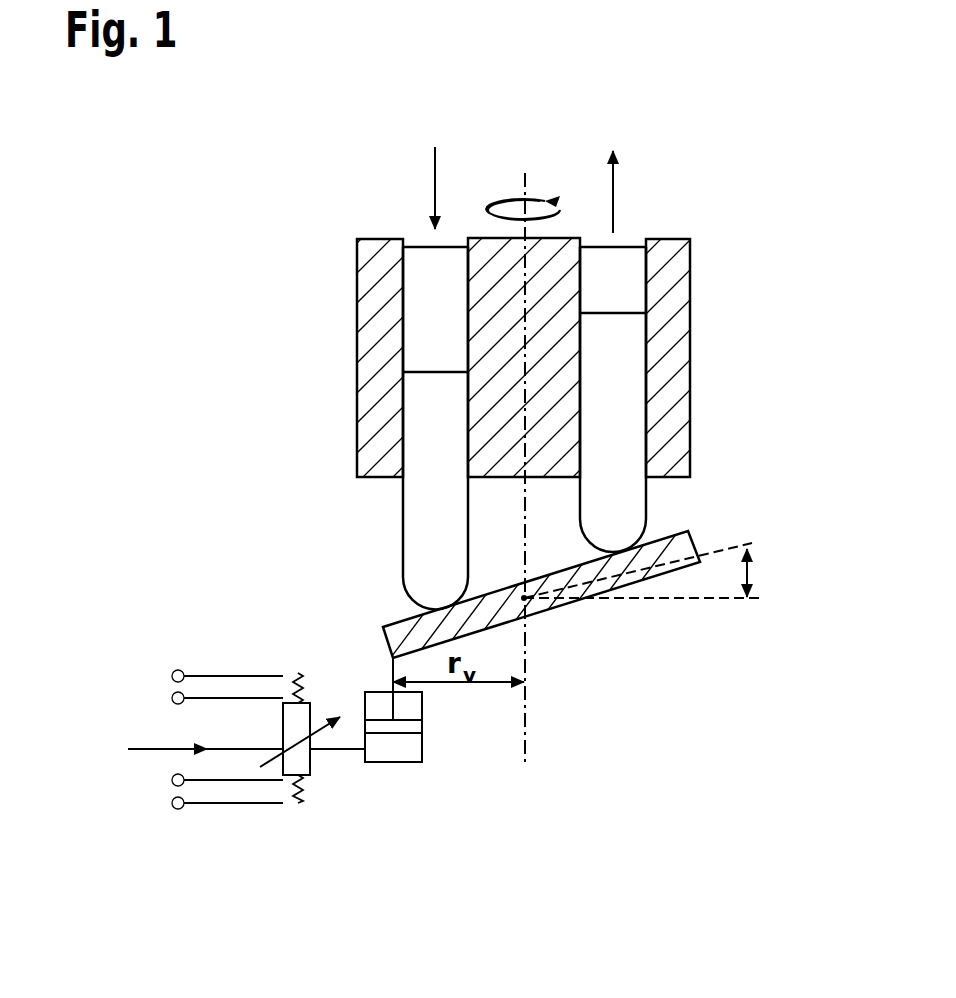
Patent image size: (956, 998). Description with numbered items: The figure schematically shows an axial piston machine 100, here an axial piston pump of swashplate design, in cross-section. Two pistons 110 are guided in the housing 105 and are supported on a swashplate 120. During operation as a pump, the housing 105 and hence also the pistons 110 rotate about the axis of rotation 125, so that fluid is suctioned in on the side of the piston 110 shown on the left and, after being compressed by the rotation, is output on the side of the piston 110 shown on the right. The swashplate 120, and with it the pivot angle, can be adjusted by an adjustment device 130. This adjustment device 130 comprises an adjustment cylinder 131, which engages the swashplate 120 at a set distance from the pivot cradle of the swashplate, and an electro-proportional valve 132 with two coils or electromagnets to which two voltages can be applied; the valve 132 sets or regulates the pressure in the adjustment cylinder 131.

The axial piston machine 100 is at (203, 280).
The housing 105 is at (680, 280).
The pistons 110 is at (625, 365).
The swashplate 120 is at (713, 602).
The axis of rotation 125 is at (530, 748).
The adjustment device 130 is at (285, 795).
The adjustment cylinder 131 is at (310, 847).
The electro-proportional valve 132 is at (307, 765).